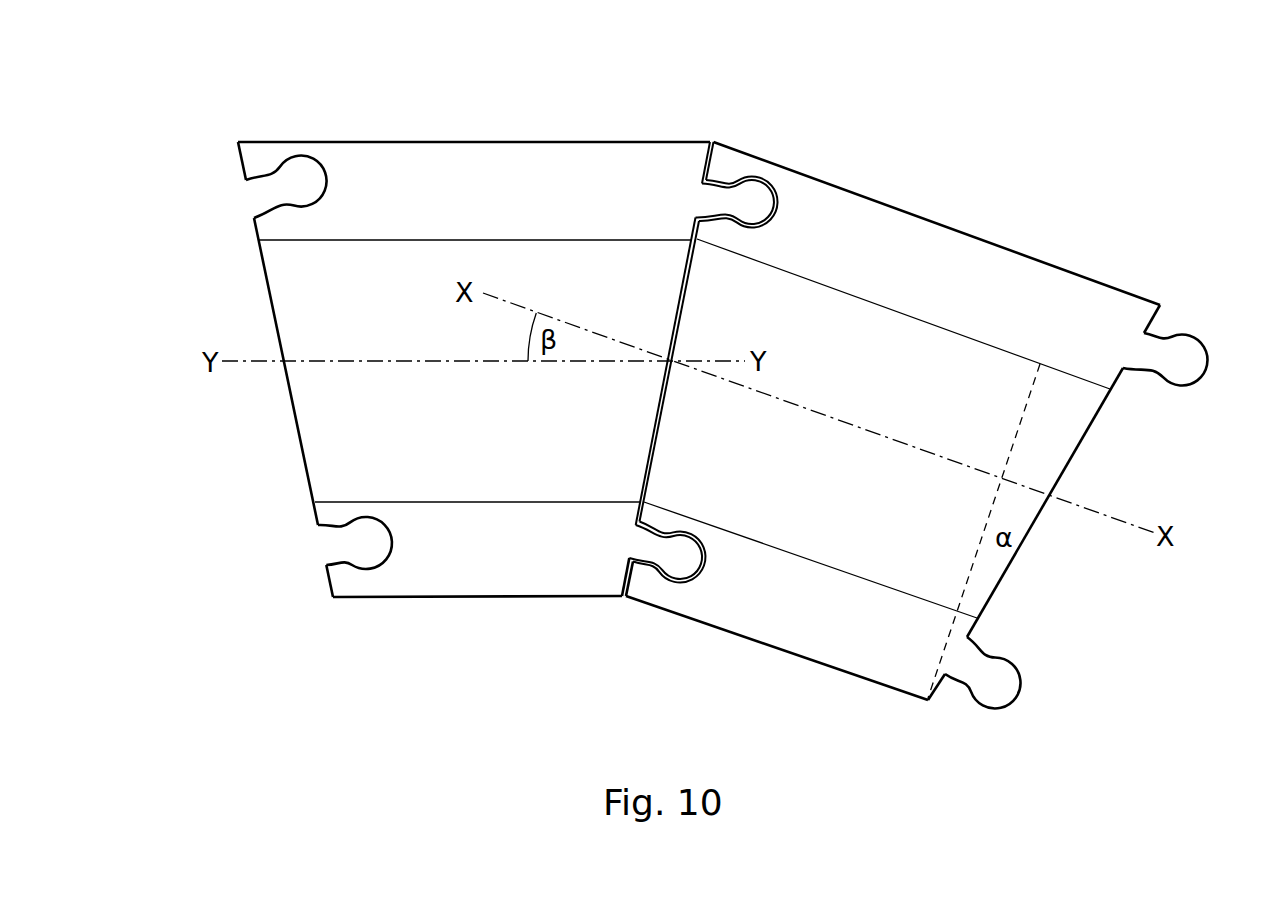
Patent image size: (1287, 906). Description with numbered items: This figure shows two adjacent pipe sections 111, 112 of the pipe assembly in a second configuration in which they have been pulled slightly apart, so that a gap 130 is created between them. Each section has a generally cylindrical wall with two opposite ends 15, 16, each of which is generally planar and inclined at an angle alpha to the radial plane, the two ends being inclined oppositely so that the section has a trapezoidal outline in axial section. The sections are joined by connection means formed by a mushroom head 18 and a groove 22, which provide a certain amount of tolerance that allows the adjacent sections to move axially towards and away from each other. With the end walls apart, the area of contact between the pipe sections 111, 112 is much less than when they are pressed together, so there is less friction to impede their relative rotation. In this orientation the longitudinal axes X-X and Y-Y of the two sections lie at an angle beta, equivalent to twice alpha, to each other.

The pipe section 111 is at (914, 205).
The pipe section 112 is at (489, 134).
The gap 130 is at (713, 142).
The end 15 is at (1087, 433).
The end 16 is at (670, 327).
The mushroom head 18 is at (758, 202).
The groove 22 is at (282, 190).